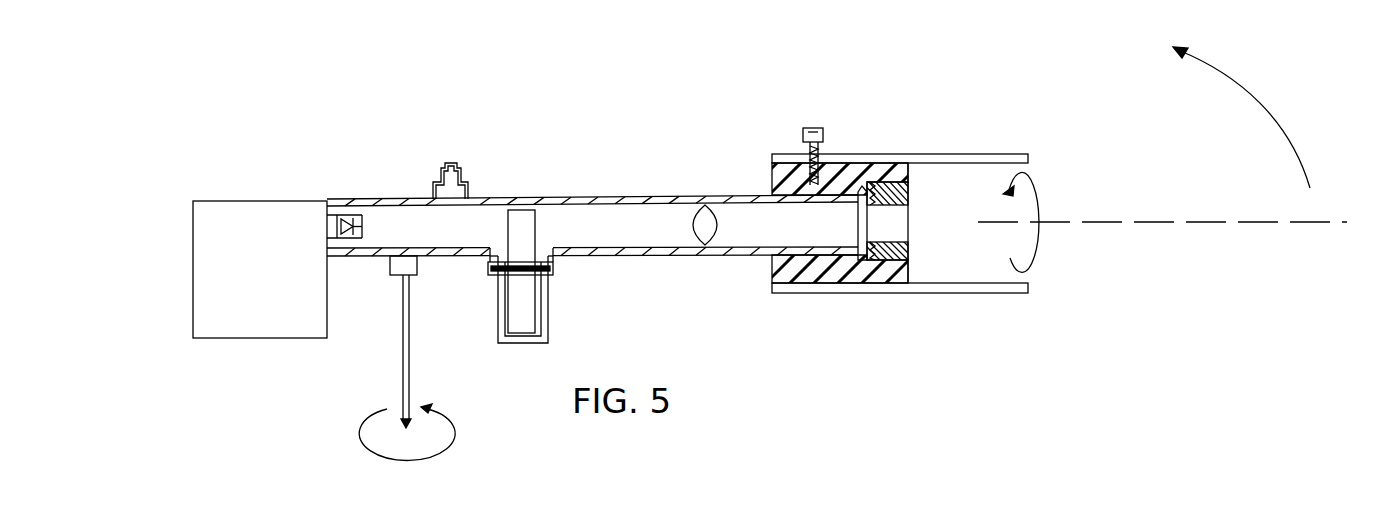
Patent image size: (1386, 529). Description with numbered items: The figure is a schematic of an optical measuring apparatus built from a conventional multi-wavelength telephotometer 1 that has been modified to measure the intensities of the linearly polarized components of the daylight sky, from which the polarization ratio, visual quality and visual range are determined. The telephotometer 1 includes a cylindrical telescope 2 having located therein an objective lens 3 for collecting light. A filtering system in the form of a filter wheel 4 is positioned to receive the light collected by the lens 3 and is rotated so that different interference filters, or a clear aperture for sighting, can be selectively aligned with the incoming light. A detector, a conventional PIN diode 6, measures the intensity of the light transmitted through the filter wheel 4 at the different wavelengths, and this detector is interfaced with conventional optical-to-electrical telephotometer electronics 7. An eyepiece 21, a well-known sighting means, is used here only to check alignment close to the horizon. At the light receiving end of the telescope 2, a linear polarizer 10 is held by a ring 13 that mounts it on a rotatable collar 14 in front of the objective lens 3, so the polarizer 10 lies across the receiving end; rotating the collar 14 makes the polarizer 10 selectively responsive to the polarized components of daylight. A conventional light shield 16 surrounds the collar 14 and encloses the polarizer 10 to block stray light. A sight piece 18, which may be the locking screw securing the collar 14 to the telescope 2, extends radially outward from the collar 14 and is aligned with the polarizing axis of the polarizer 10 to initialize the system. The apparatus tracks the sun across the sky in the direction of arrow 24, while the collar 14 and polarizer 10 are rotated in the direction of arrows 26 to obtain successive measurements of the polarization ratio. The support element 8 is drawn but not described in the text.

The multi-wavelength telephotometer 1 is at (705, 125).
The cylindrical telescope 2 is at (612, 197).
The objective lens 3 is at (693, 232).
The filter wheel 4 is at (527, 218).
The PIN diode 6 is at (362, 224).
The telephotometer electronics 7 is at (266, 281).
The rotatable support rod 8 is at (408, 318).
The linear polarizer 10 is at (860, 228).
The ring 13 is at (908, 200).
The rotatable collar 14 is at (772, 268).
The light shield 16 is at (890, 158).
The sight piece 18 is at (820, 150).
The eyepiece 21 is at (450, 163).
The arrow 24 is at (1243, 88).
The arrows 26 is at (1038, 192).